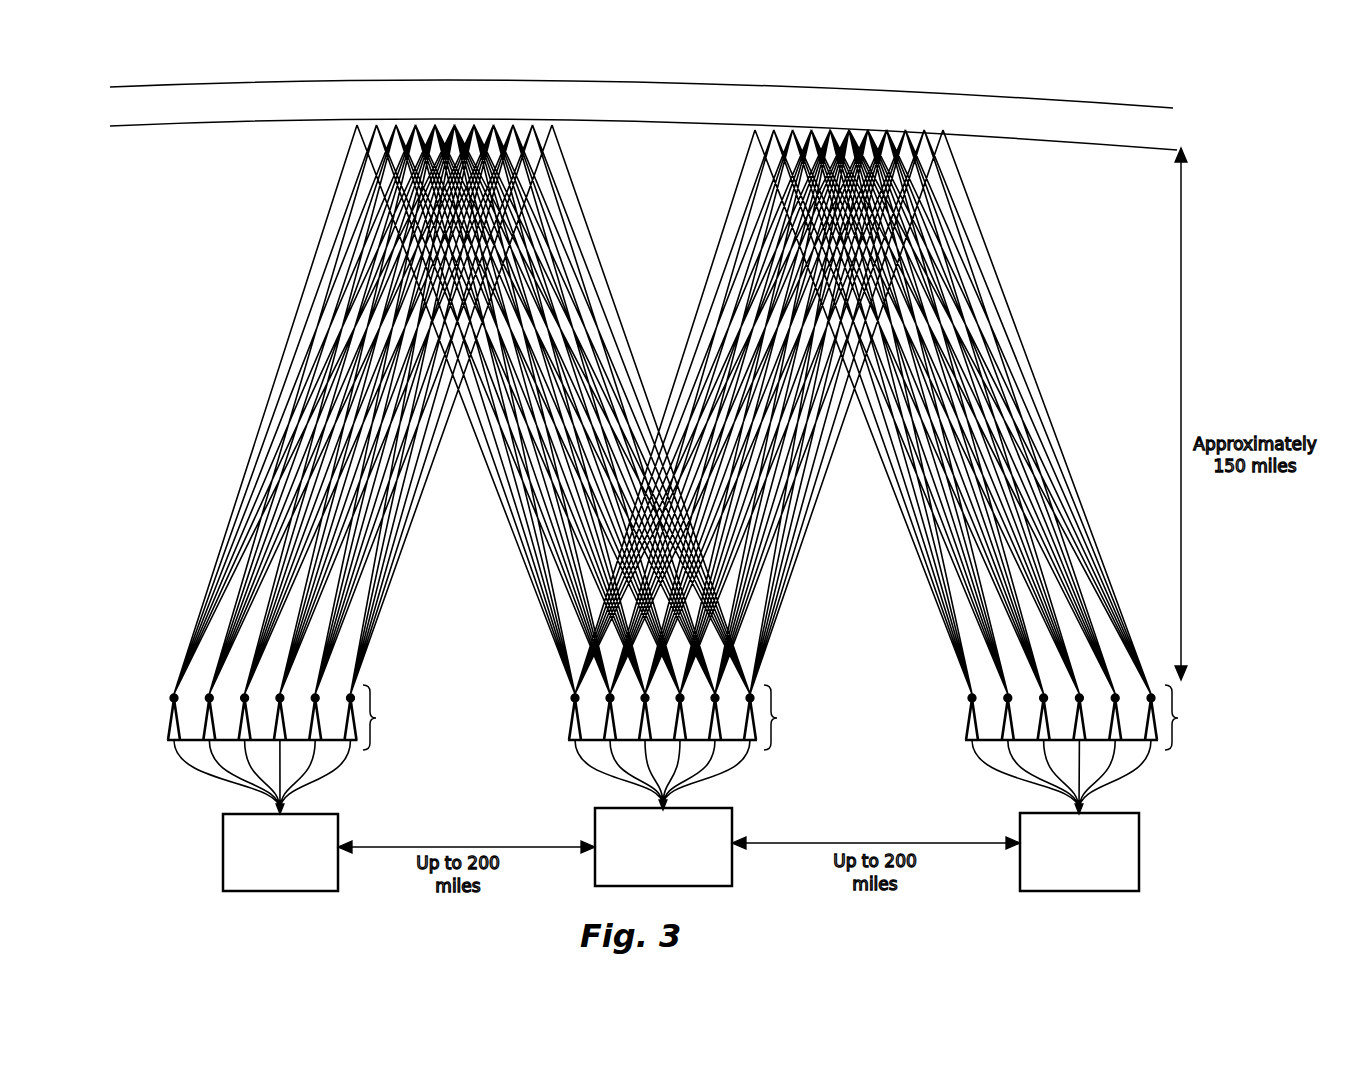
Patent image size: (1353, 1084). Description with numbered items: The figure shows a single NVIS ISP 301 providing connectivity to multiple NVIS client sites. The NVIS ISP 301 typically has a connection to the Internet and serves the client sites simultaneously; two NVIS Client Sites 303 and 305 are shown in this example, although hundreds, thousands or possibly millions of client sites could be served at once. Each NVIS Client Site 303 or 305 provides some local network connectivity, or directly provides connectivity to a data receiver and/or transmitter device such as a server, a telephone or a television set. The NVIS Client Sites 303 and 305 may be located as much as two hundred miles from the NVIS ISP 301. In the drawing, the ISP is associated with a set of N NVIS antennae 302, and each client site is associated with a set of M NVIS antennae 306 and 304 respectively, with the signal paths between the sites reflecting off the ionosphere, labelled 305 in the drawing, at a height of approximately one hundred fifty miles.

The NVIS ISP 301 is at (663, 847).
The N NVIS antennae 302 is at (722, 747).
The NVIS Client Site 303 is at (1079, 852).
The M NVIS antennae 304 is at (1115, 749).
The NVIS Client Site 305 is at (643, 485).
The M NVIS antennae 306 is at (315, 749).